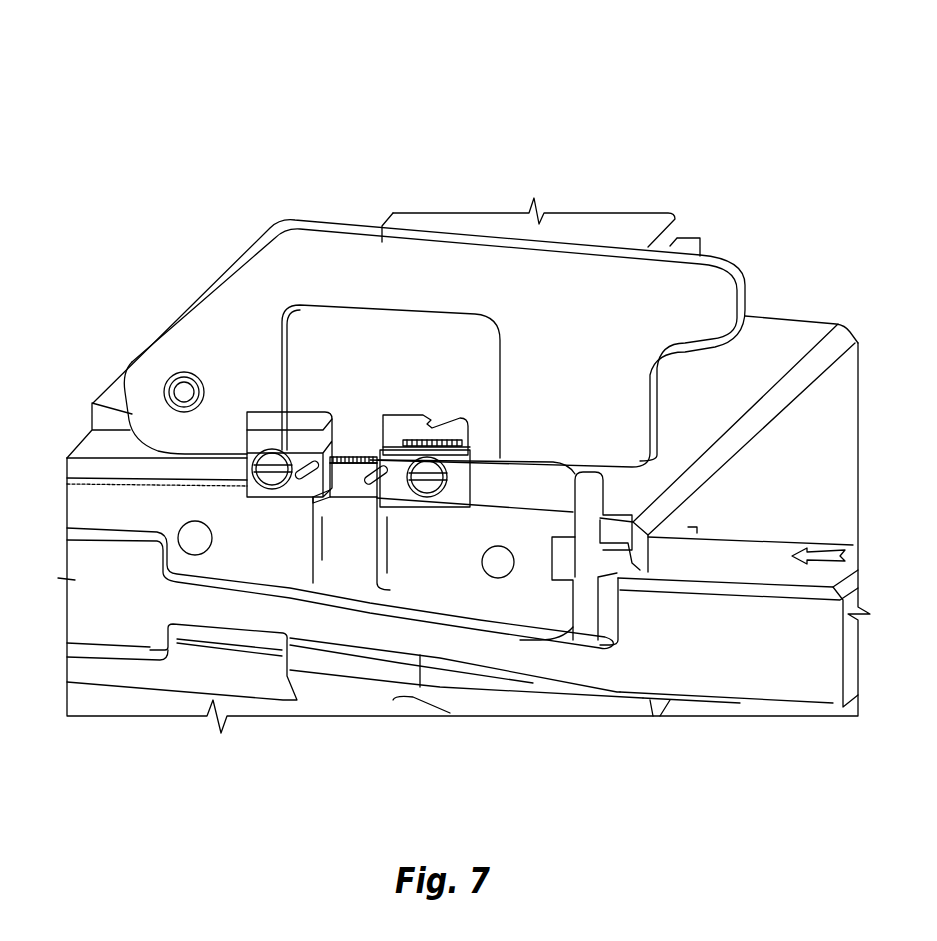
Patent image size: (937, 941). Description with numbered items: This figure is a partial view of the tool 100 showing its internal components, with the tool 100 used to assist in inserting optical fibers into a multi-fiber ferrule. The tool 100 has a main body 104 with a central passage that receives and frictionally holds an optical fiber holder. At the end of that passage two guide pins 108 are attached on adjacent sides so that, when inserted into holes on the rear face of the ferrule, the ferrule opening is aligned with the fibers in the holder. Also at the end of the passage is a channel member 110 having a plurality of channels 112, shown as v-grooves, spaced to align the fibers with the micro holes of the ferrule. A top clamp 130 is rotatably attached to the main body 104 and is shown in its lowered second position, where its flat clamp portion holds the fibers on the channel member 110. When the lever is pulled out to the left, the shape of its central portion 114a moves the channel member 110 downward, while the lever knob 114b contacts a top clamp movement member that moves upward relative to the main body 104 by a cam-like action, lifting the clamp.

The tool 100 is at (722, 116).
The main body 104 is at (858, 345).
The guide pins 108 is at (378, 476).
The channel member 110 is at (347, 479).
The channels 112 is at (358, 457).
The central portion of the lever 114a is at (327, 627).
The lever knob 114b is at (705, 673).
The top clamp 130 is at (747, 293).